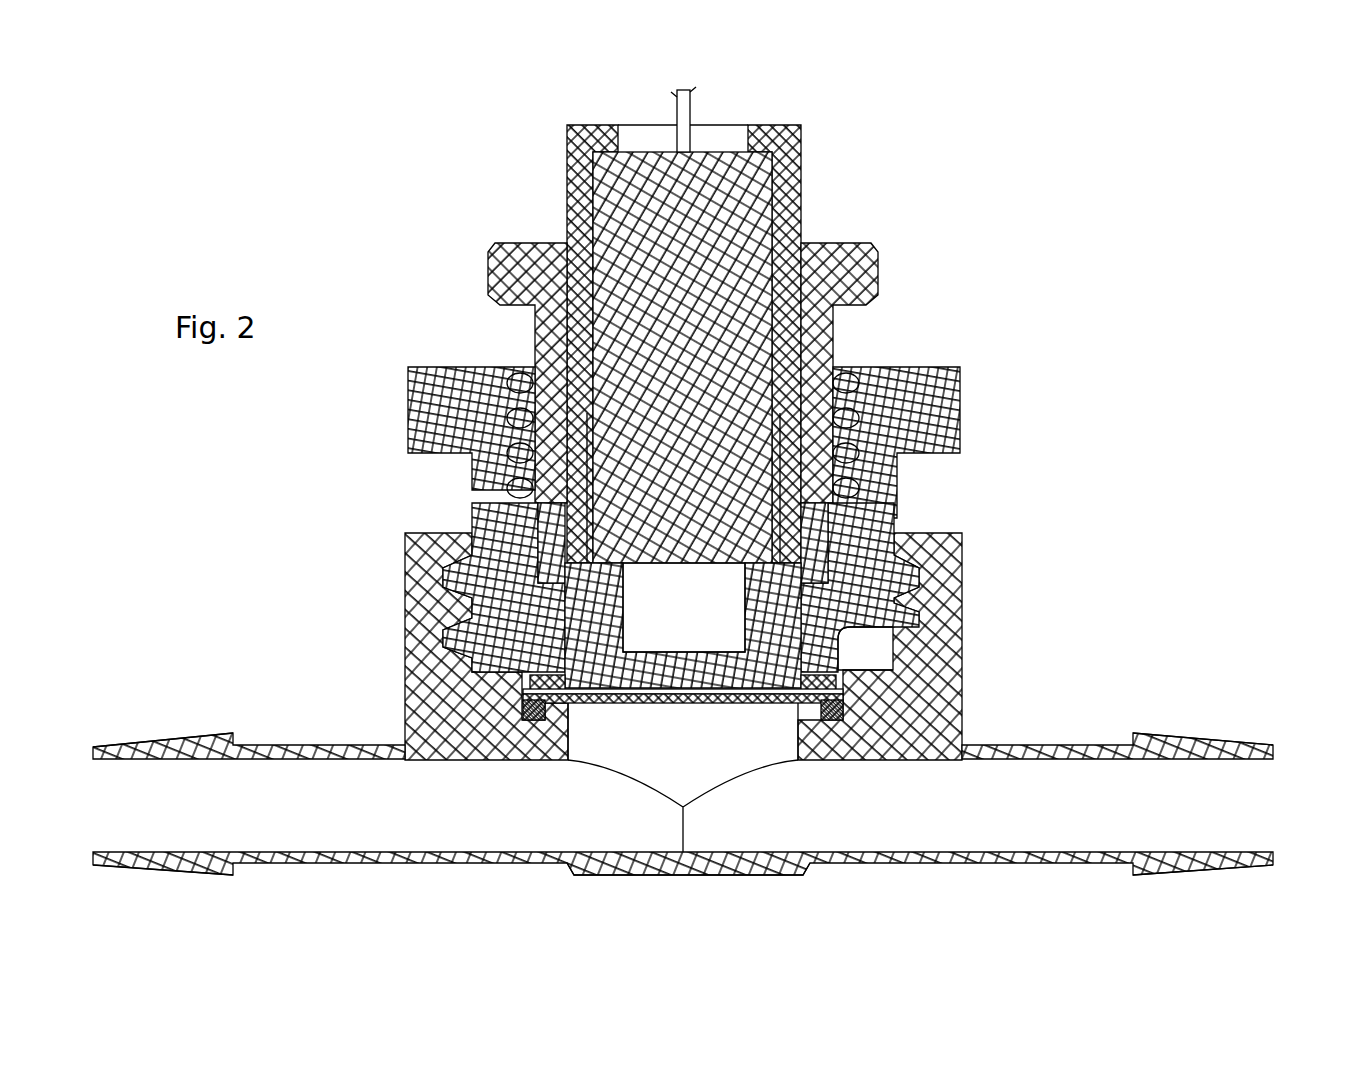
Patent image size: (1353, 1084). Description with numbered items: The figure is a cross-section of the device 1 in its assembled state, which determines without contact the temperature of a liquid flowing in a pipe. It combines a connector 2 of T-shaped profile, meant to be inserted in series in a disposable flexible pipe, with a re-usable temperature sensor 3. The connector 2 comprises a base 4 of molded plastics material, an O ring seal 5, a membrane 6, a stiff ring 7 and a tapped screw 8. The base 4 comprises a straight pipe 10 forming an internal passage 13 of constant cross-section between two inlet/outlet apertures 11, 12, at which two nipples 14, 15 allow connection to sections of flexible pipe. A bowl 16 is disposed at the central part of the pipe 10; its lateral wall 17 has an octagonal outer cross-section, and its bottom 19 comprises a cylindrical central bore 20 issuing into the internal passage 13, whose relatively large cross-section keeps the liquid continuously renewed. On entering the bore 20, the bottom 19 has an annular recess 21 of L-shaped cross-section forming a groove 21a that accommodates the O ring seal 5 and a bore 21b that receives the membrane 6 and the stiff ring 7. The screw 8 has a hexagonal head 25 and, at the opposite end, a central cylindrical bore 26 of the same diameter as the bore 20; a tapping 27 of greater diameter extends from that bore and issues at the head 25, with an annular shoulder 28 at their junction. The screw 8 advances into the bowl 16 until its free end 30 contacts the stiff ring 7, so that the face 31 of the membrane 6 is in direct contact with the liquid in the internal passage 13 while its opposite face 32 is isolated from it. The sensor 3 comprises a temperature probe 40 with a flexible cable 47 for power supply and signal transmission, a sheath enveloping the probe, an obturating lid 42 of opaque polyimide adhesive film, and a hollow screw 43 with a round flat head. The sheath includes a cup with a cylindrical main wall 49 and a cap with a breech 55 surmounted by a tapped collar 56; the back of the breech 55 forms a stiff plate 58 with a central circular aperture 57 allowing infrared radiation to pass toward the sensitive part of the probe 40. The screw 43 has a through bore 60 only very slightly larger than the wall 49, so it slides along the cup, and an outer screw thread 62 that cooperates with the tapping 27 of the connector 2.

The device 1 is at (190, 136).
The connector 2 is at (1095, 512).
The temperature sensor 3 is at (940, 208).
The base 4 is at (1052, 622).
The 'O' ring seal 5 is at (540, 722).
The membrane 6 is at (755, 660).
The stiff ring 7 is at (540, 688).
The tapped screw 8 is at (942, 478).
The straight pipe 10 is at (520, 877).
The inlet/outlet aperture 11 is at (80, 770).
The inlet/outlet aperture 12 is at (1280, 773).
The internal passage 13 is at (985, 822).
The nipple 14 is at (195, 866).
The nipple 15 is at (1128, 875).
The bowl 16 is at (387, 633).
The lateral wall 17 is at (960, 610).
The bottom 19 is at (870, 705).
The cylindrical central bore 20 is at (585, 765).
The annular recess 21 is at (850, 660).
The groove 21a is at (535, 724).
The bore 21b is at (522, 680).
The hexagonal head 25 is at (960, 394).
The central cylindrical bore 26 is at (812, 682).
The tapping 27 is at (880, 525).
The annular shoulder 28 is at (875, 580).
The free end 30 is at (838, 722).
The face 31 is at (683, 706).
The opposite face 32 is at (690, 688).
The temperature probe 40 is at (760, 210).
The obturating lid 42 is at (628, 692).
The hollow screw 43 is at (834, 340).
The flexible cable 47 is at (690, 96).
The cylindrical main wall 49 is at (803, 186).
The breech 55 is at (595, 603).
The tapped collar 56 is at (552, 538).
The circular aperture 57 is at (663, 662).
The stiff plate 58 is at (737, 654).
The through bore 60 is at (570, 268).
The screw thread 62 is at (850, 380).